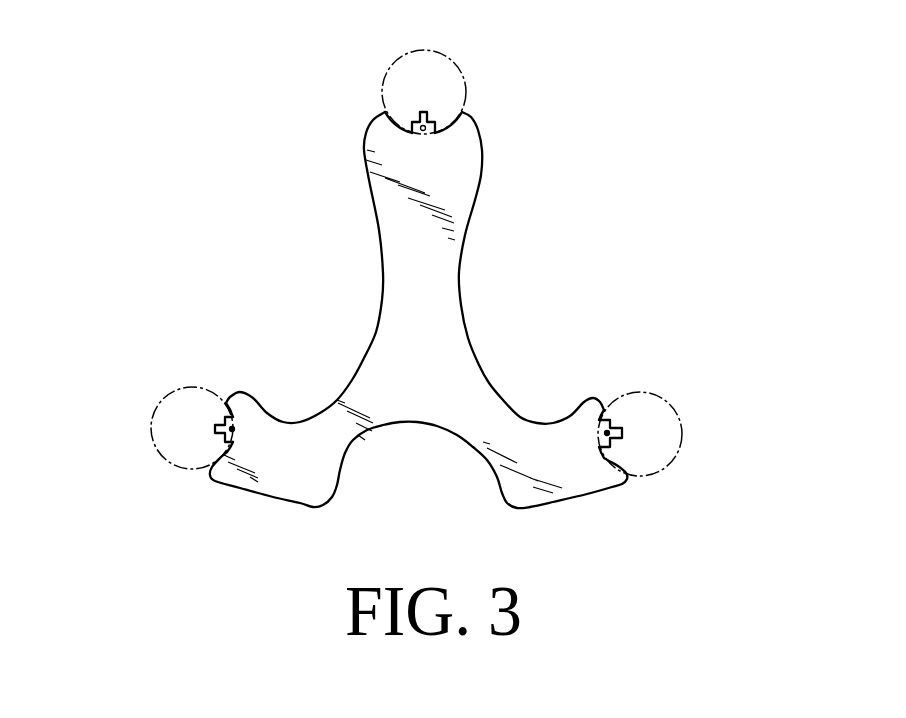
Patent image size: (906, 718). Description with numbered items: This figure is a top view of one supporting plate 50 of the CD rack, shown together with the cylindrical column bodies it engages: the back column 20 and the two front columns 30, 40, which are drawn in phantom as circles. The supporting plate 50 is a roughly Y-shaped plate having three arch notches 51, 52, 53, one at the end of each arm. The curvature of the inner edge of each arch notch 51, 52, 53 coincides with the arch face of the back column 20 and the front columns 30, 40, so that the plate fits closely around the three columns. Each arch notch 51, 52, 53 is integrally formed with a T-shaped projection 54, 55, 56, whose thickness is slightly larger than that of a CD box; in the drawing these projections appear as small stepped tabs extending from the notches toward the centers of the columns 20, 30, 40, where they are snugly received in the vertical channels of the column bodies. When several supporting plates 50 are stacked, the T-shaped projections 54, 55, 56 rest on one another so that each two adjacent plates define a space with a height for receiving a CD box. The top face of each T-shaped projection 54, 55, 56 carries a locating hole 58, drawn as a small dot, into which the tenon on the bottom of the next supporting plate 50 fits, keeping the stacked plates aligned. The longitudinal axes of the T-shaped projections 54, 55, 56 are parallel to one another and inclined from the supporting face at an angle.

The back column 20 is at (448, 72).
The front column 30 is at (162, 418).
The front column 40 is at (653, 472).
The supporting plate 50 is at (308, 495).
The arch notch 51 is at (397, 124).
The arch notch 52 is at (226, 452).
The arch notch 53 is at (607, 413).
The T-shaped projection 54 is at (427, 110).
The T-shaped projection 55 is at (222, 420).
The T-shaped projection 56 is at (620, 432).
The locating hole 58 is at (420, 112).